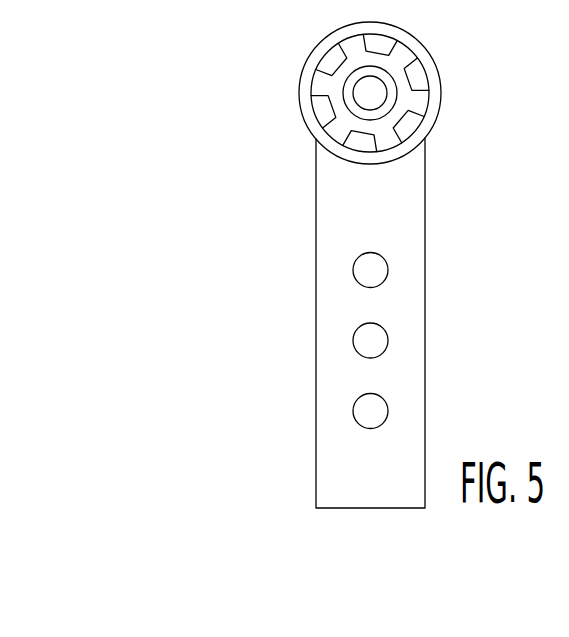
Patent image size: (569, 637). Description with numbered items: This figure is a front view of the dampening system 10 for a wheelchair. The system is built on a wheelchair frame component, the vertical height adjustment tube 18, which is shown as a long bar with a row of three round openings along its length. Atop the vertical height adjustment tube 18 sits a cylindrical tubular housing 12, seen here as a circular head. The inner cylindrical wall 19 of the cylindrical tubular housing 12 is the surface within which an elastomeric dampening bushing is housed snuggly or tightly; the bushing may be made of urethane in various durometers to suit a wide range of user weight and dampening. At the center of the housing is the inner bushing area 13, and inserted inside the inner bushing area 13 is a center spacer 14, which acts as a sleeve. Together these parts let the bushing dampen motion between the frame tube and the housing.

The dampening system 10 is at (247, 353).
The cylindrical tubular housing 12 is at (440, 77).
The inner bushing area 13 is at (367, 92).
The center spacer 14 is at (358, 115).
The vertical height adjustment tube 18 is at (393, 337).
The inner cylindrical wall 19 is at (358, 150).